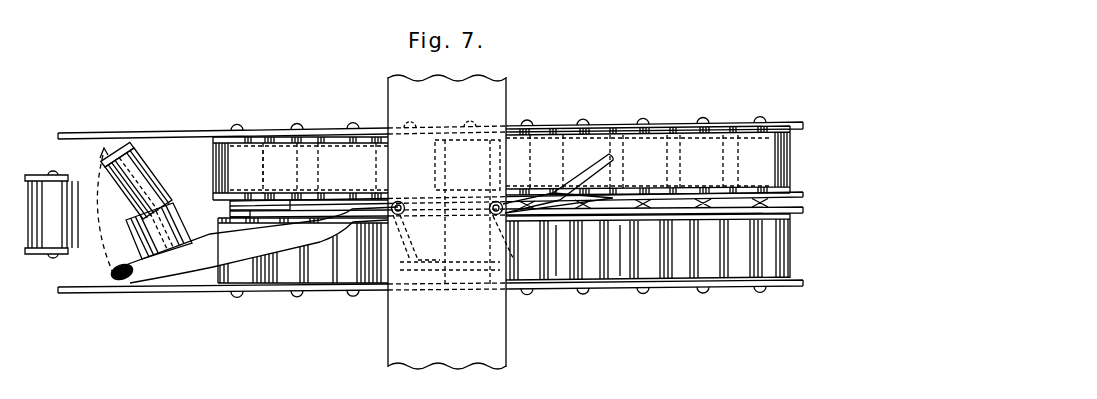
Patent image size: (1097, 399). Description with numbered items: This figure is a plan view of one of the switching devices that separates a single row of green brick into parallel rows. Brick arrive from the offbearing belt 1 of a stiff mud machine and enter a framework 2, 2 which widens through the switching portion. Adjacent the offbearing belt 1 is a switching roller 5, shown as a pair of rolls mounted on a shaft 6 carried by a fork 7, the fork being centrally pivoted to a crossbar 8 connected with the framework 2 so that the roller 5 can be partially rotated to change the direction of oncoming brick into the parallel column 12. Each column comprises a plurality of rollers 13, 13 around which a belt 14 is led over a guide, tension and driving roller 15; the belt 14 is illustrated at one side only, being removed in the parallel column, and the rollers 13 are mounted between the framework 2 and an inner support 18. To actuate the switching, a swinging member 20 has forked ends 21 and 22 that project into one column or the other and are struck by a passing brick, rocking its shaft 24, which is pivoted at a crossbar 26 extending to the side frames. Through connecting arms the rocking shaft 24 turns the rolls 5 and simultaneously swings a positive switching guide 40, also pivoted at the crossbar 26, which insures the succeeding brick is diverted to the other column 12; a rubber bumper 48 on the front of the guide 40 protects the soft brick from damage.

The offbearing belt 1 is at (240, 153).
The framework 2 is at (80, 132).
The switching roller 5 is at (143, 160).
The shaft 6 is at (122, 148).
The fork 7 is at (177, 170).
The crossbar 8 is at (143, 183).
The column 12 is at (620, 130).
The rollers 13 is at (303, 328).
The belt 14 is at (305, 108).
The guide tension and driving roller 15 is at (706, 339).
The inner support 18 is at (567, 335).
The swinging member 20 is at (553, 193).
The forked end 21 is at (598, 157).
The forked end 22 is at (610, 200).
The shaft 24 is at (487, 184).
The crossbar 26 is at (480, 90).
The switching guide 40 is at (268, 336).
The rubber bumper 48 is at (115, 379).